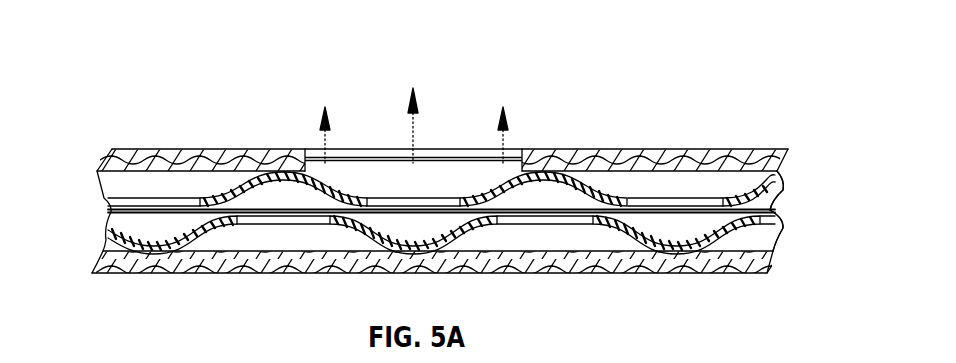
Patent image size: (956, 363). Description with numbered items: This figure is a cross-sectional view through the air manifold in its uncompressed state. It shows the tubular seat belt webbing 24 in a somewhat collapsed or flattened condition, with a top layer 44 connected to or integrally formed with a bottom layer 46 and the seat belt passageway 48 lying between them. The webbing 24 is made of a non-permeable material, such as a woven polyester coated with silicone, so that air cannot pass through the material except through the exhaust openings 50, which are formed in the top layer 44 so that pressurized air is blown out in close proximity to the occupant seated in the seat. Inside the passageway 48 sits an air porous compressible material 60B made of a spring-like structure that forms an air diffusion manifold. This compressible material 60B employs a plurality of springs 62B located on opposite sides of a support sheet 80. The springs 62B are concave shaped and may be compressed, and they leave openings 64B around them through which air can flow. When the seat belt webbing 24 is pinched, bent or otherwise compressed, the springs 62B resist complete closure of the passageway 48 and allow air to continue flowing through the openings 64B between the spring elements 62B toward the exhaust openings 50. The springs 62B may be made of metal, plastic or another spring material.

The tubular seat belt webbing 24 is at (723, 150).
The top layer 44 is at (627, 150).
The bottom layer 46 is at (655, 273).
The seat belt passageway 48 is at (768, 238).
The exhaust openings 50 is at (437, 155).
The air porous compressible material 60B is at (528, 172).
The springs 62B is at (253, 187).
The openings 64B is at (122, 182).
The support sheet 80 is at (112, 224).